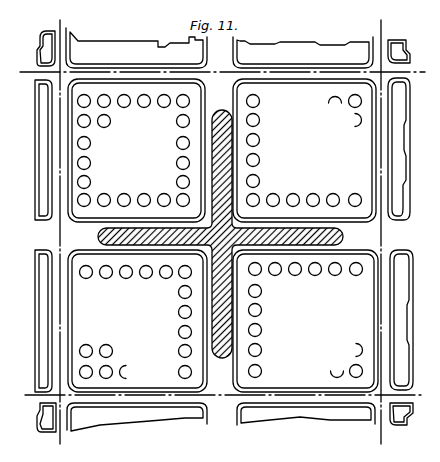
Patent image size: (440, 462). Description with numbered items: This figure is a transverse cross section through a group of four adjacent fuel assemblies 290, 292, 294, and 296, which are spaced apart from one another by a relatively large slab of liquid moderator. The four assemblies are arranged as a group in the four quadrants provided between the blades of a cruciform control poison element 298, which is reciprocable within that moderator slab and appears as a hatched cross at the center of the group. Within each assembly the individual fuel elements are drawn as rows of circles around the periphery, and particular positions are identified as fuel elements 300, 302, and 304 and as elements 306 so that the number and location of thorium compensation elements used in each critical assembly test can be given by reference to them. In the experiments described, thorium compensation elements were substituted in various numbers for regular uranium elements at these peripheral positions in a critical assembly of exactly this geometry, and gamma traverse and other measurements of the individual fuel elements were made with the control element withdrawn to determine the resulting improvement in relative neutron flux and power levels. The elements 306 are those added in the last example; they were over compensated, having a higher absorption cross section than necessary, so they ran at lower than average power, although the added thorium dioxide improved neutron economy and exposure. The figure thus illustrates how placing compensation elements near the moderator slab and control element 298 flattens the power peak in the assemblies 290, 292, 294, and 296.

The fuel assembly 290 is at (77, 155).
The fuel assembly 292 is at (350, 90).
The fuel assembly 294 is at (77, 360).
The fuel assembly 296 is at (357, 386).
The cruciform control poison element 298 is at (343, 233).
The fuel element 300 is at (178, 195).
The fuel element 302 is at (179, 107).
The fuel element 304 is at (180, 194).
The thorium compensation elements 306 is at (101, 194).